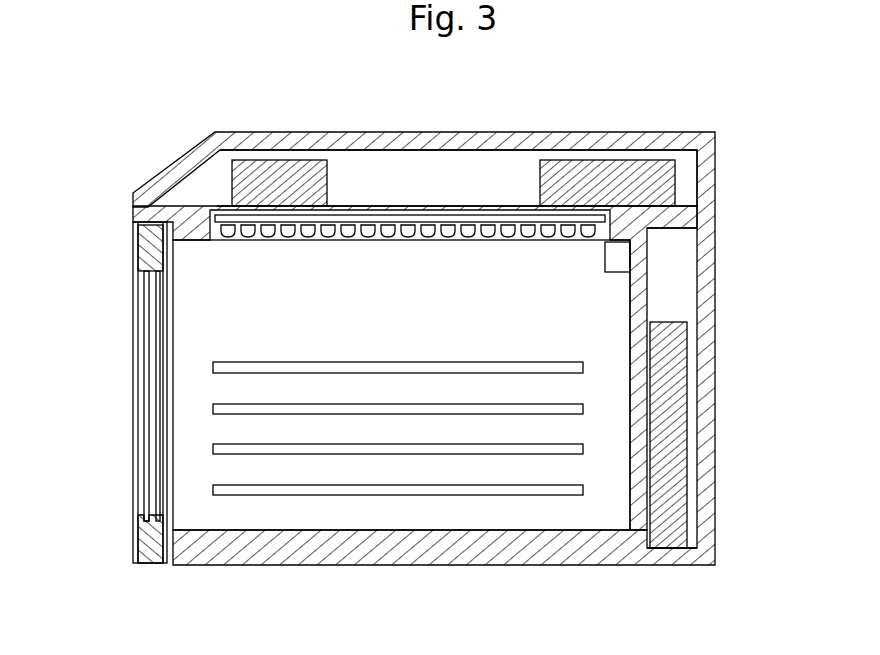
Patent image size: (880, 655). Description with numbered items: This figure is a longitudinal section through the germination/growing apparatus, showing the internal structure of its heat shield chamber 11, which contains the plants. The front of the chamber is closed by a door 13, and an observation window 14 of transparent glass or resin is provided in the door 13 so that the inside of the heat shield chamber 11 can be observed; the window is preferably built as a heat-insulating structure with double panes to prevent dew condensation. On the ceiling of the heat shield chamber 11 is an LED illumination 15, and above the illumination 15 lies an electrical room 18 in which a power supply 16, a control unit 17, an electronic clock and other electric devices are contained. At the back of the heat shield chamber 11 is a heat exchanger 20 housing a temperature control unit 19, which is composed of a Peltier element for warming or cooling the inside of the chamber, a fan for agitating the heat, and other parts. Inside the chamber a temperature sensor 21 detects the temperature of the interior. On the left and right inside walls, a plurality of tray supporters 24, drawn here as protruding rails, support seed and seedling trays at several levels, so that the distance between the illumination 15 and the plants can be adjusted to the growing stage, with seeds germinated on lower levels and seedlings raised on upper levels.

The heat shield chamber 11 is at (202, 507).
The door 13 is at (142, 548).
The observation window 14 is at (133, 368).
The LED illumination 15 is at (403, 240).
The power supply 16 is at (625, 168).
The control unit 17 is at (268, 160).
The electrical room 18 is at (438, 168).
The temperature control unit 19 is at (672, 505).
The heat exchanger 20 is at (690, 258).
The temperature sensor 21 is at (613, 268).
The tray supporter 24 is at (490, 362).